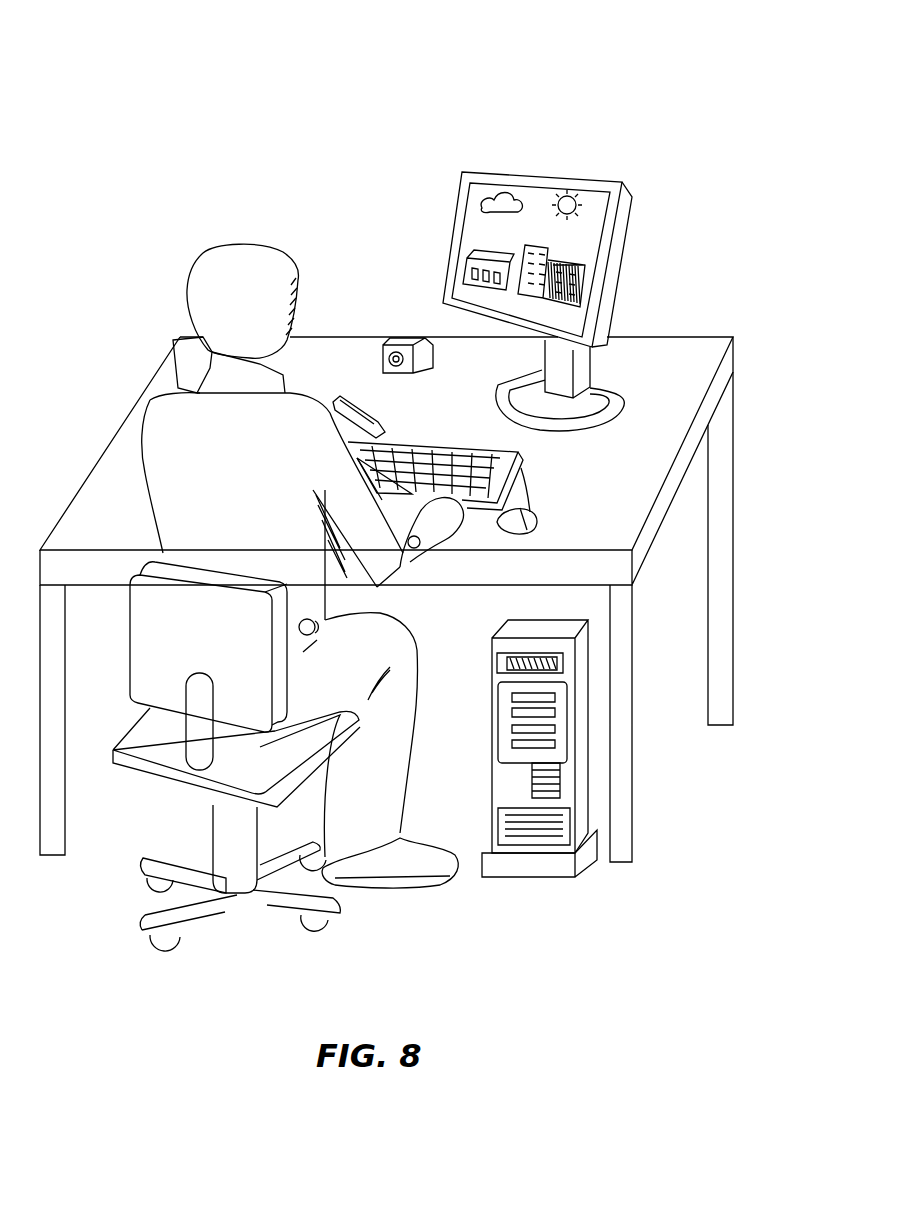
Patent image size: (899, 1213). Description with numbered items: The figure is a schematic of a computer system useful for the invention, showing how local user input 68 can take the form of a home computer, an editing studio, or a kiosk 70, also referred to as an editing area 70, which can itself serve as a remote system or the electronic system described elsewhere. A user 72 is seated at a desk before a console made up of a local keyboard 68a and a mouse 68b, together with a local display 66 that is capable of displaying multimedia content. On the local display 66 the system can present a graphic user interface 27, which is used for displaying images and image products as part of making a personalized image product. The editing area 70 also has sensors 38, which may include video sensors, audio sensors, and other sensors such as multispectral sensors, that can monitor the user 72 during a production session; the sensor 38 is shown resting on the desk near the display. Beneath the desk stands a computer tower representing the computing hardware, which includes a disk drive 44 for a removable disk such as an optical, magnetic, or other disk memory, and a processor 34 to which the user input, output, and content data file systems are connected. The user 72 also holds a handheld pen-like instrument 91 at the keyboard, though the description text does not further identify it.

The editing area 70 is at (318, 100).
The local display 66 is at (562, 173).
The graphic user interface 27 is at (583, 183).
The local user input 68 is at (665, 290).
The sensors 38 is at (418, 340).
The user 72 is at (172, 385).
The pen 91 is at (351, 392).
The local keyboard 68a is at (522, 459).
The mouse 68b is at (542, 521).
The disk drive 44 is at (500, 660).
The processor 34 is at (535, 866).